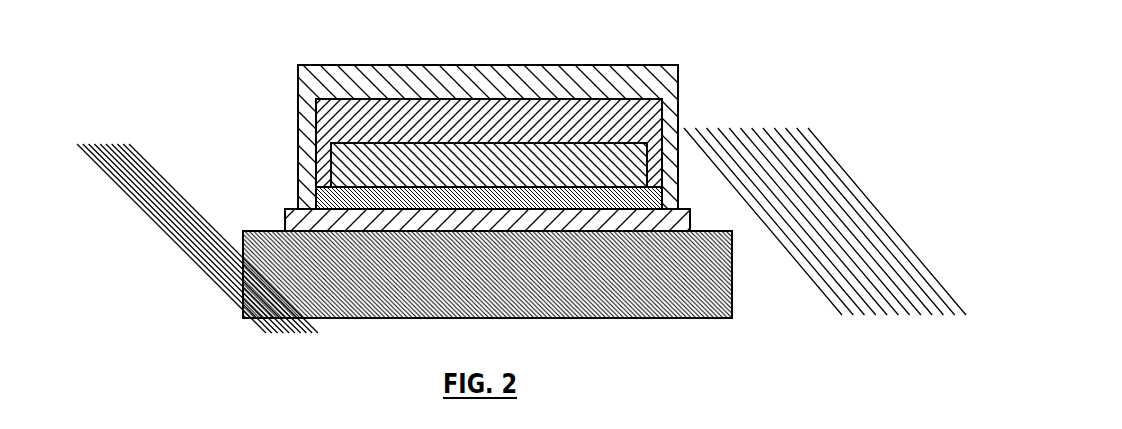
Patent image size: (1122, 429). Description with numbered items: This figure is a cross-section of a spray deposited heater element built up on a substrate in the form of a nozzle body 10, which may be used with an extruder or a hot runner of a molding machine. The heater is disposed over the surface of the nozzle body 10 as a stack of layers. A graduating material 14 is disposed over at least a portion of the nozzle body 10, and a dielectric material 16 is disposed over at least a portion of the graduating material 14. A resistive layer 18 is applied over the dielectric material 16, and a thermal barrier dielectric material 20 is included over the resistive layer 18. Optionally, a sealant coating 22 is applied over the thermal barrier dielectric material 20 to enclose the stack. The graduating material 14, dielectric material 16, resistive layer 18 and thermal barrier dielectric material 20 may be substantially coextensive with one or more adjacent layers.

The nozzle body 10 is at (732, 273).
The graduating material 14 is at (283, 218).
The dielectric material 16 is at (662, 190).
The resistive layer 18 is at (331, 165).
The thermal barrier dielectric material 20 is at (680, 133).
The sealant coating 22 is at (481, 65).